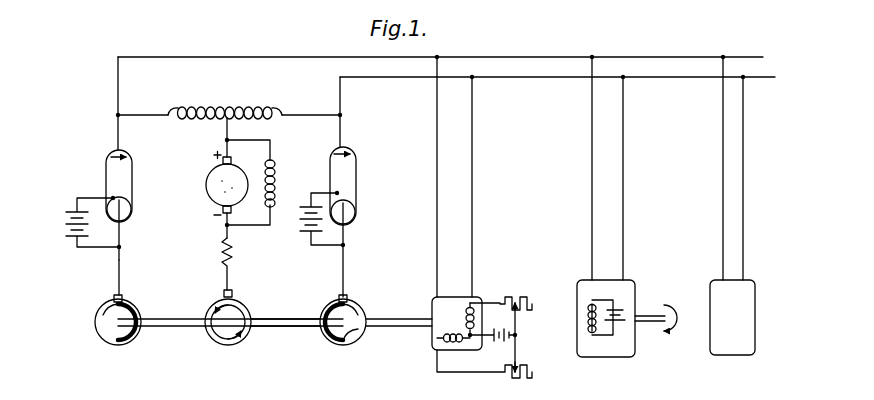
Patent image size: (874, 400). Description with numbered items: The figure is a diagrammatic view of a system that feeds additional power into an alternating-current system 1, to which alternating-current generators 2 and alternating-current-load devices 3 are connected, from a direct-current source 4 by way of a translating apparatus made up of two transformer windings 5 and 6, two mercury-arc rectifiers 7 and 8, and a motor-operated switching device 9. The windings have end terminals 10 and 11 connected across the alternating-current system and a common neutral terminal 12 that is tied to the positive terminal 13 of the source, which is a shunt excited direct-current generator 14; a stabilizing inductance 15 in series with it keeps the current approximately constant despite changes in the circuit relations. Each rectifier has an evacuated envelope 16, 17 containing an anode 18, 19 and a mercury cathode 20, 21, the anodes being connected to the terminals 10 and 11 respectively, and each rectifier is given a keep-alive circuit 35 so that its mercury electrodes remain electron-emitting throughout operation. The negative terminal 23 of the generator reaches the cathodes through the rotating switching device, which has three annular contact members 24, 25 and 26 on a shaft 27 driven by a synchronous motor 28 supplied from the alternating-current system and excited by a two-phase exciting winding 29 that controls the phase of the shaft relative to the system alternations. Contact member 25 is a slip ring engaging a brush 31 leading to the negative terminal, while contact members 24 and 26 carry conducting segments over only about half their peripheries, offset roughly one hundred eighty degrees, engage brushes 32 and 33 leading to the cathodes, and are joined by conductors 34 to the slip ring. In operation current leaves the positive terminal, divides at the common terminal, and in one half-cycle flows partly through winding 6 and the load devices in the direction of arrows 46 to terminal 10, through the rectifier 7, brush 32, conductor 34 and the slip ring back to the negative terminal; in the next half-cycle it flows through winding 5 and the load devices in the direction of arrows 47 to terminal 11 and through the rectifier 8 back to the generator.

The alternating-current system 1 is at (500, 57).
The alternating-current generator 2 is at (748, 290).
The alternating-current-load device 3 is at (620, 288).
The direct-current source 4 is at (201, 180).
The transformer winding 5 is at (196, 108).
The transformer winding 6 is at (268, 108).
The mercury-arc rectifier 7 is at (131, 163).
The mercury-arc rectifier 8 is at (348, 175).
The motor-operated switching device 9 is at (270, 314).
The end terminal 10 is at (117, 116).
The end terminal 11 is at (344, 115).
The common neutral terminal 12 is at (226, 120).
The positive terminal 13 is at (229, 122).
The shunt excited direct-current generator 14 is at (217, 190).
The stabilizing inductance 15 is at (232, 252).
The evacuated envelope 16 is at (132, 186).
The evacuated envelope 17 is at (352, 192).
The anode 18 is at (114, 157).
The anode 19 is at (353, 157).
The mercury cathode 20 is at (131, 215).
The mercury cathode 21 is at (353, 217).
The negative terminal 23 is at (225, 226).
The annular contact member 24 is at (96, 328).
The slip ring 25 is at (216, 340).
The annular contact member 26 is at (339, 343).
The shaft 27 is at (379, 318).
The synchronous motor 28 is at (432, 300).
The two-phase exciting winding 29 is at (455, 343).
The brush 31 is at (233, 294).
The brush 32 is at (123, 299).
The brush 33 is at (348, 298).
The conductor 34 is at (168, 318).
The keep-alive circuit 35 is at (77, 207).
The arrows 46 is at (185, 68).
The arrows 47 is at (264, 68).